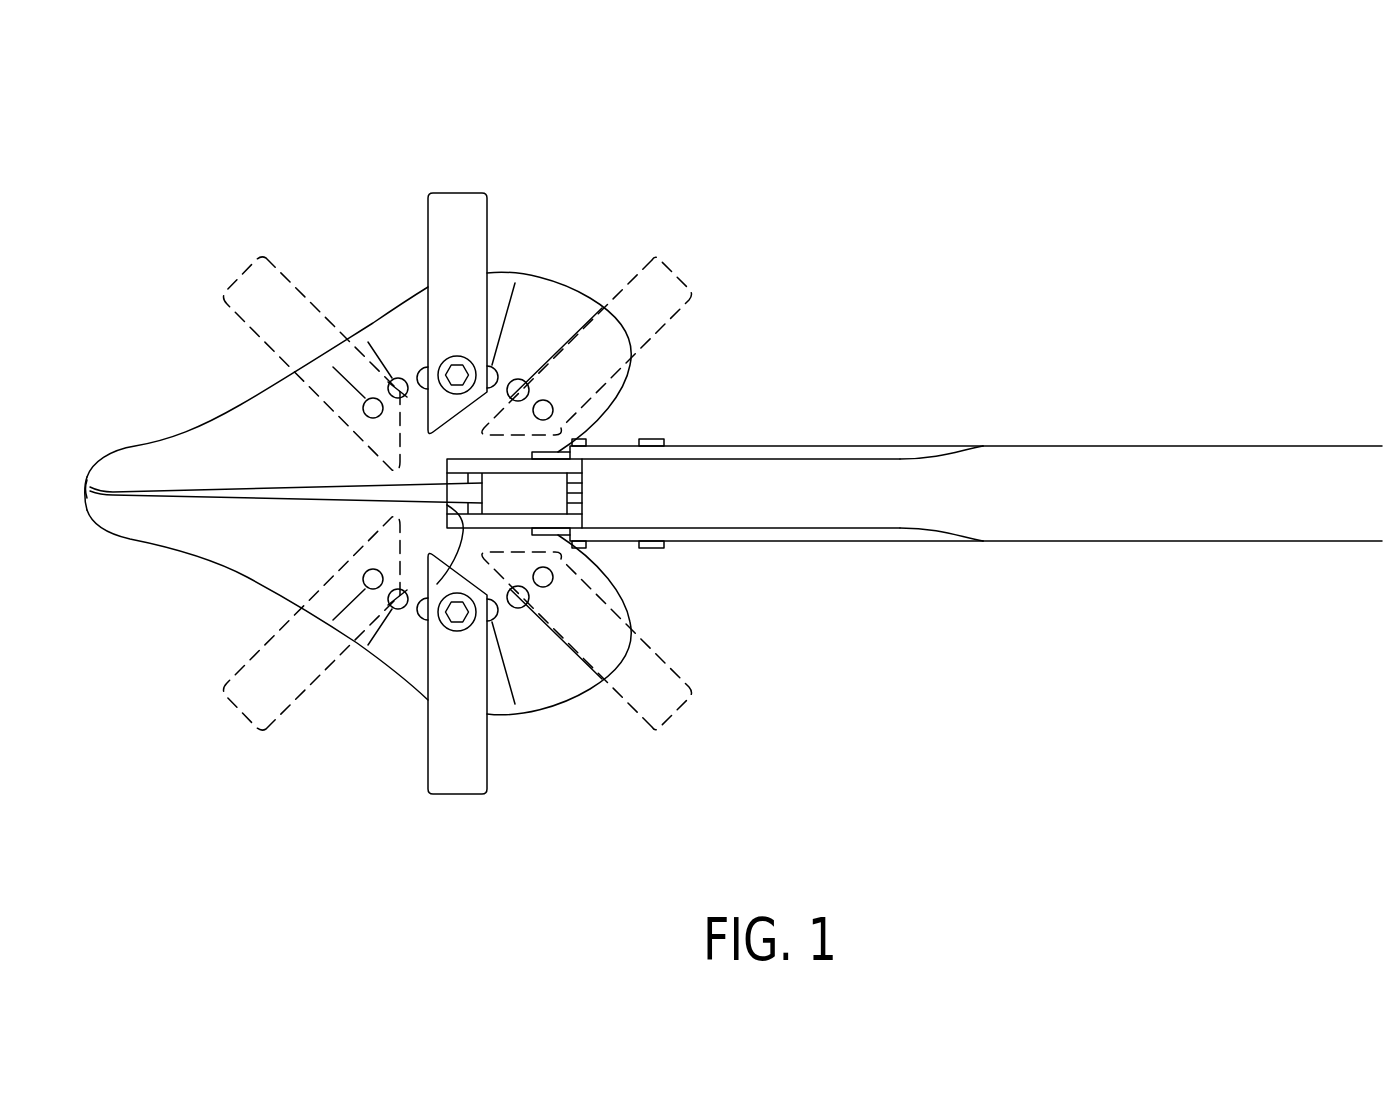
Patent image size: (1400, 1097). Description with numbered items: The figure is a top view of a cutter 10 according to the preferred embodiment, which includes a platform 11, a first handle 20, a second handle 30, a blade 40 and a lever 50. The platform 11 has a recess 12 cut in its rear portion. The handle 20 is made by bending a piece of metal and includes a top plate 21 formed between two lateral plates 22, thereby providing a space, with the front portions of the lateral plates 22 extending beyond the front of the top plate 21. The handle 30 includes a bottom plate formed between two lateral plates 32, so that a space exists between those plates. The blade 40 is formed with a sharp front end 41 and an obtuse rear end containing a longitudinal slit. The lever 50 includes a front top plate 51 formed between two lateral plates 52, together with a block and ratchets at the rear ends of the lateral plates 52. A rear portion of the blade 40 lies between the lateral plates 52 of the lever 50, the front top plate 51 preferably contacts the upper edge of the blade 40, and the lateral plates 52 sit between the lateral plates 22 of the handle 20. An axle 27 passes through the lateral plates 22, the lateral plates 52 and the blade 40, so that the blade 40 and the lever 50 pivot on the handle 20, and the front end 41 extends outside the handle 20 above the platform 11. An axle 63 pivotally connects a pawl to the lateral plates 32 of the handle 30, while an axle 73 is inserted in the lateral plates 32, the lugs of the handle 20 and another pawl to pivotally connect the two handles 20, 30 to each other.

The cutter 10 is at (242, 212).
The platform 11 is at (198, 440).
The recess 12 is at (447, 482).
The lateral plates 22 is at (480, 522).
The axle 27 is at (545, 535).
The axle 73 is at (574, 444).
The axle 63 is at (660, 440).
The lateral plates 32 is at (747, 453).
The handle 30 is at (845, 446).
The top plate 21 is at (947, 492).
The handle 20 is at (1283, 446).
The blade 40 is at (248, 493).
The sharp front end 41 is at (85, 477).
The lever 50 is at (877, 602).
The front top plate 51 is at (558, 494).
The lateral plates 52 is at (475, 479).